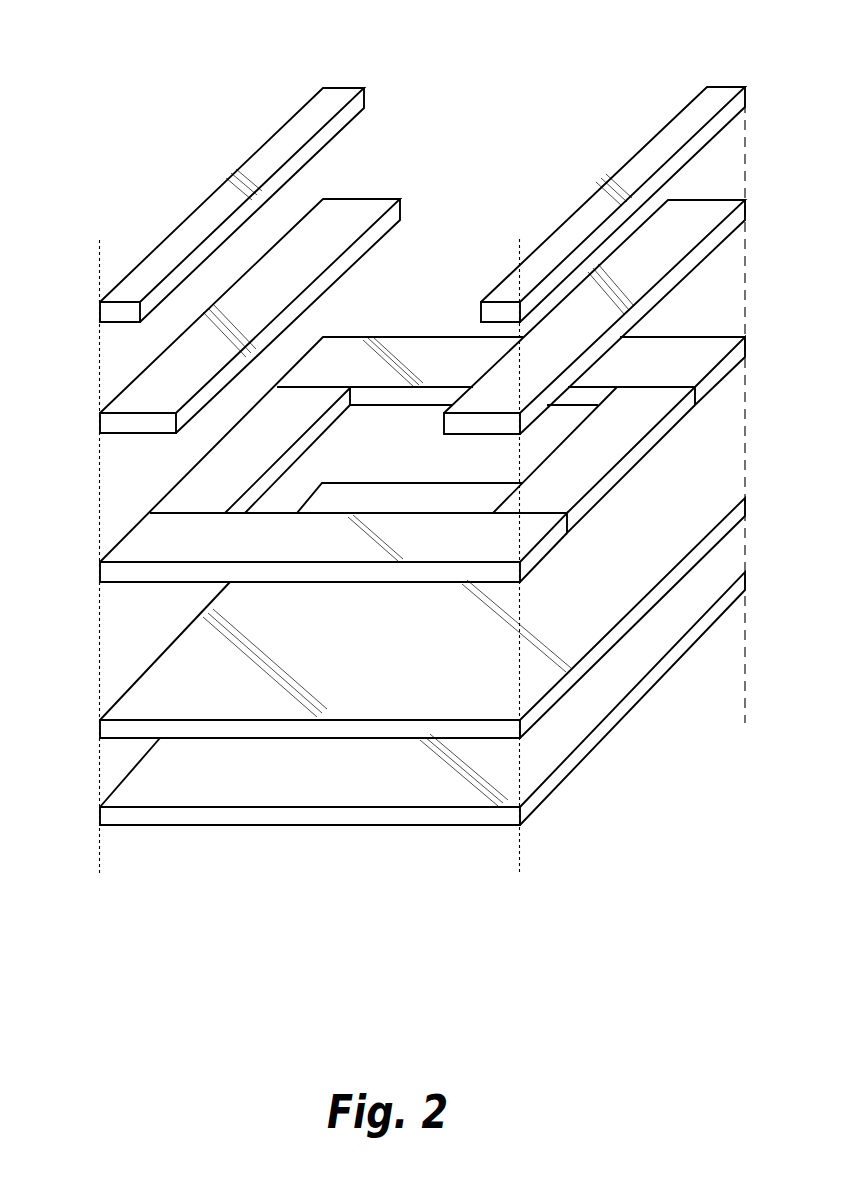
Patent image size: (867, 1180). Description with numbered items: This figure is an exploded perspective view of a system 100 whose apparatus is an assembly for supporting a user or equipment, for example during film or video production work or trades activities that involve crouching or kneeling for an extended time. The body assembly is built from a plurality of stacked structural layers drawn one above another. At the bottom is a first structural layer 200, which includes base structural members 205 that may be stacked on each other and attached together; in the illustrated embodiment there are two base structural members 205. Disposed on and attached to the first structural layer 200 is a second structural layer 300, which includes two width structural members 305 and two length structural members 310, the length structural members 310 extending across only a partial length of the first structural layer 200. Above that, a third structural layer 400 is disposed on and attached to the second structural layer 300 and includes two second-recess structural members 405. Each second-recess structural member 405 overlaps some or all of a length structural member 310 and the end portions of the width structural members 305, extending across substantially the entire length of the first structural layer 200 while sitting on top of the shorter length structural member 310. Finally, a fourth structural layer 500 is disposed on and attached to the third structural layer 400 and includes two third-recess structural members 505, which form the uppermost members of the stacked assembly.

The system 100 is at (145, 75).
The first structural layer 200 is at (125, 780).
The base structural member 205 is at (603, 592).
The second structural layer 300 is at (107, 573).
The width structural member 305 is at (421, 361).
The length structural member 310 is at (262, 440).
The third structural layer 400 is at (100, 425).
The second-recess structural member 405 is at (297, 275).
The fourth structural layer 500 is at (100, 311).
The third-recess structural member 505 is at (270, 163).